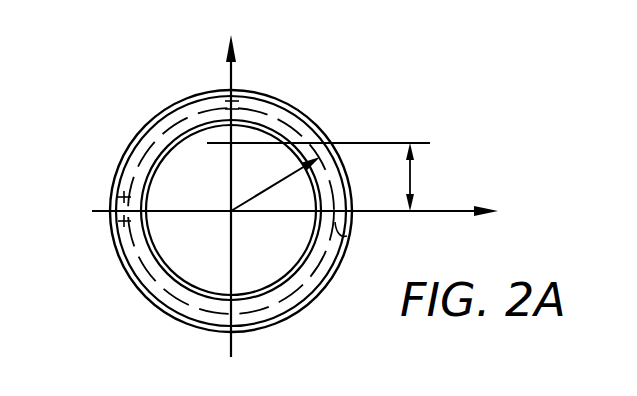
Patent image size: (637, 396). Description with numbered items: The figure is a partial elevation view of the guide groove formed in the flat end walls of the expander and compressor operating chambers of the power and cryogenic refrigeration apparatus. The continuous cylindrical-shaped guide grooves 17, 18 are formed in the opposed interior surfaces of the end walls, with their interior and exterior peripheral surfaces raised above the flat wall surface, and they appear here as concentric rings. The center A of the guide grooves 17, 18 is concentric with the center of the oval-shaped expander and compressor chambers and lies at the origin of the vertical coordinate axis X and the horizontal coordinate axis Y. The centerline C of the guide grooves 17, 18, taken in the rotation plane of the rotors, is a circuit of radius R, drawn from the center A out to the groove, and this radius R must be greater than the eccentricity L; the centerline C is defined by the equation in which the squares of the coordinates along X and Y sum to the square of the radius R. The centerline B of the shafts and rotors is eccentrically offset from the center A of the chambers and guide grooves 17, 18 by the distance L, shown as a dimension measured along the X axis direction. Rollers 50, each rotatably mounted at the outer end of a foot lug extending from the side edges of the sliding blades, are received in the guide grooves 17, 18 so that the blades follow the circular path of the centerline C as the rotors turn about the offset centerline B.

The roller 50 is at (219, 88).
The guide groove 17 is at (271, 106).
The guide groove 18 is at (231, 211).
The center of the guide grooves A is at (230, 212).
The centerline of the shafts and rotors B is at (225, 147).
The centerline of the guide grooves C is at (345, 238).
The circuit radius R is at (275, 184).
The eccentricity L is at (319, 177).
The vertical coordinate X is at (219, 195).
The horizontal coordinate Y is at (303, 210).